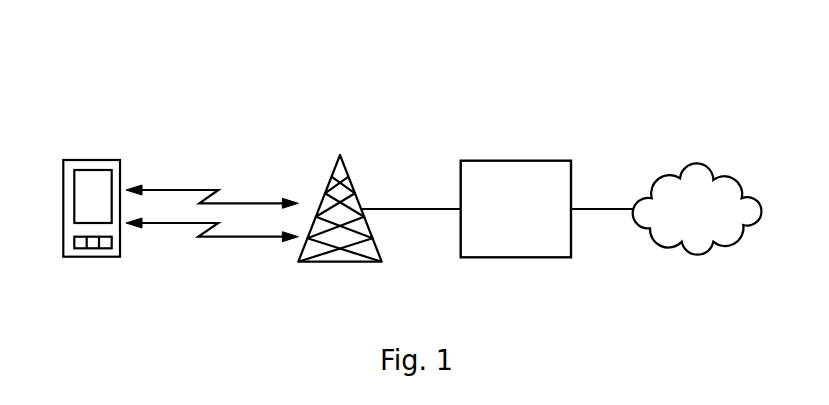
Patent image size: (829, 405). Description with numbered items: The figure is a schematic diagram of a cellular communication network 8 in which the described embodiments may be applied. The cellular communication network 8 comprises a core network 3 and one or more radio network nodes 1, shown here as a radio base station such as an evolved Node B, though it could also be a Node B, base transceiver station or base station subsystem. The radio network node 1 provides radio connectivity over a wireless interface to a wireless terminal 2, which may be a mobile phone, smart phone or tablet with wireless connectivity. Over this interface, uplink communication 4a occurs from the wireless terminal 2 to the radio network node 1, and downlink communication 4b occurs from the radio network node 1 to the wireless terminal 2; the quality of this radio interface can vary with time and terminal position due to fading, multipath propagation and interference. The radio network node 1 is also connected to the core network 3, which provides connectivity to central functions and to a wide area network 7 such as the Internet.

The radio network node 1 is at (354, 188).
The wireless terminal 2 is at (91, 160).
The core network 3 is at (508, 207).
The uplink communication 4a is at (173, 188).
The downlink communication 4b is at (242, 238).
The wide area network 7 is at (688, 218).
The cellular communication network 8 is at (628, 88).